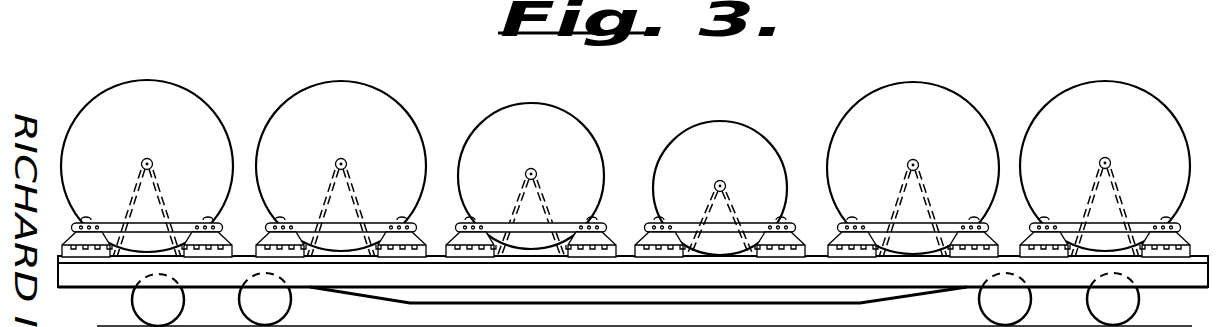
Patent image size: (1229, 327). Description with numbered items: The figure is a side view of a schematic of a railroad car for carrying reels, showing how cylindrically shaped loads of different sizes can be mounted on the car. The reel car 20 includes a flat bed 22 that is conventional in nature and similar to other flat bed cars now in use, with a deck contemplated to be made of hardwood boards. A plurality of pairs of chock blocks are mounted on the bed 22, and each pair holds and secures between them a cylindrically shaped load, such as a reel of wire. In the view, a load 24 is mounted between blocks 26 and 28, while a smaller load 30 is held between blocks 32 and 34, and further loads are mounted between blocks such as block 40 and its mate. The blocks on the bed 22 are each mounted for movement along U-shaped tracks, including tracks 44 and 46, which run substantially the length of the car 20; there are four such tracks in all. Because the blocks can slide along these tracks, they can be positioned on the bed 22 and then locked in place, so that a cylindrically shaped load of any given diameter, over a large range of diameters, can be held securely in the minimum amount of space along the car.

The reel car 20 is at (1053, 67).
The flat bed 22 is at (1166, 278).
The load 24 is at (386, 132).
The block 26 is at (416, 234).
The block 28 is at (265, 235).
The smaller load 30 is at (560, 143).
The block 32 is at (601, 227).
The block 34 is at (462, 238).
The block 40 is at (751, 157).
The U-shaped track 44 is at (792, 238).
The U-shaped track 46 is at (647, 243).